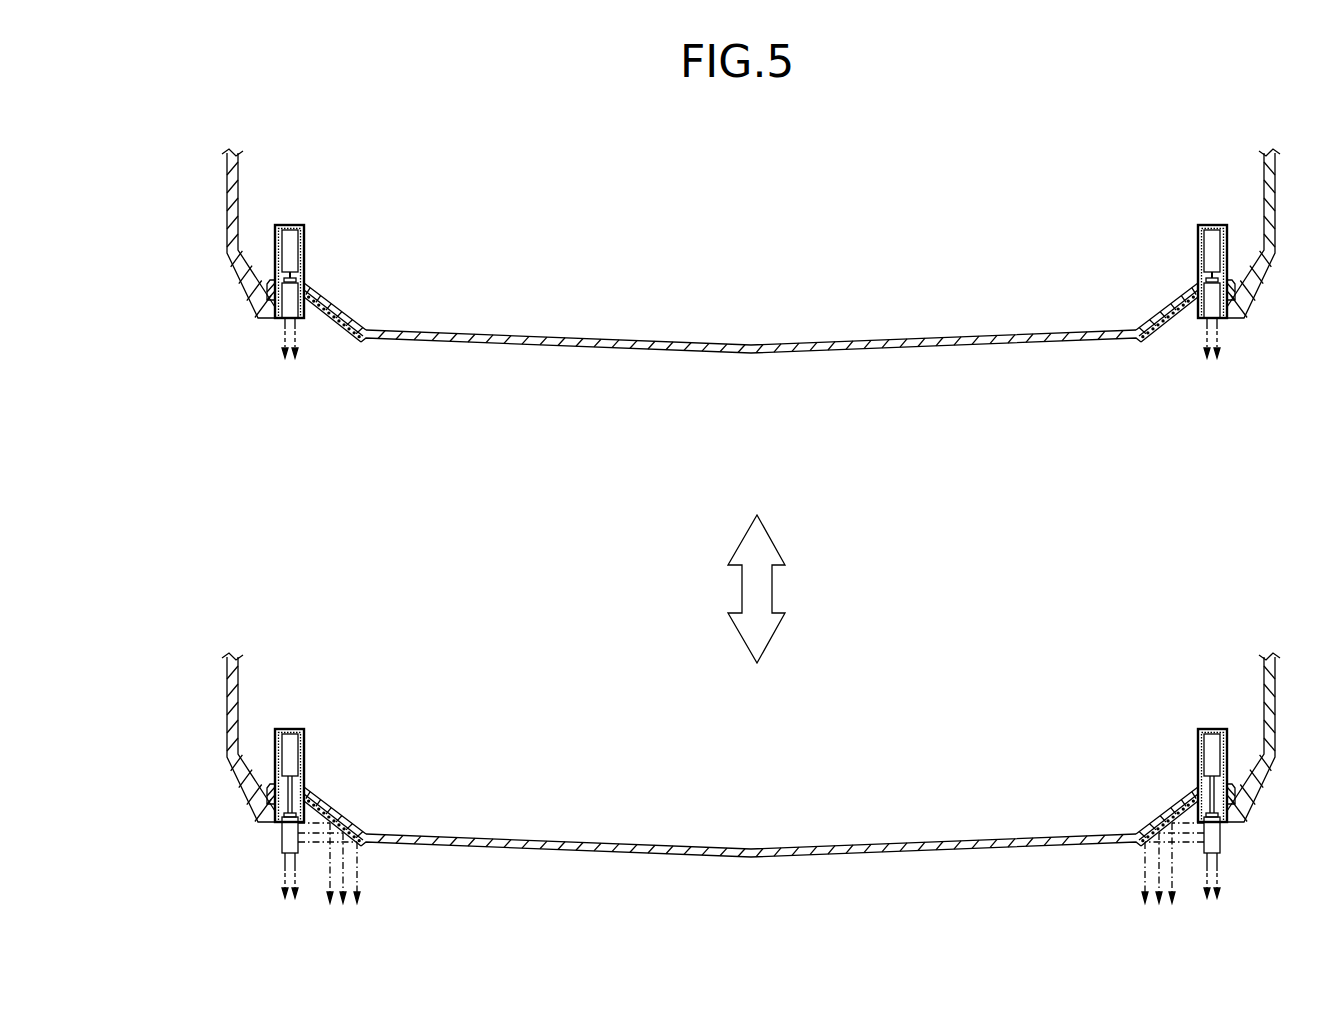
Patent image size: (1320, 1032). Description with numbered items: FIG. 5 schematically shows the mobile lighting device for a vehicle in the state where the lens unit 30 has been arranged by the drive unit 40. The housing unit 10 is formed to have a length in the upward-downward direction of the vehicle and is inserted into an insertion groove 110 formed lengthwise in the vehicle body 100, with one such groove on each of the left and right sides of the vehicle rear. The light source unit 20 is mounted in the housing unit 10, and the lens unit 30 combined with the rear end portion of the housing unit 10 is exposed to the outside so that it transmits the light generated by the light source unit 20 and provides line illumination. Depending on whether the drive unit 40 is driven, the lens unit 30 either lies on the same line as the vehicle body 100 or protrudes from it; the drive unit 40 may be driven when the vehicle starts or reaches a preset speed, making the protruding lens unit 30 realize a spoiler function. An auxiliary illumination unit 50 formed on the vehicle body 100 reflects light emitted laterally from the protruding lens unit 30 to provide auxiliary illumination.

The housing unit 10 is at (287, 305).
The light source unit 20 is at (286, 271).
The lens unit 30 is at (268, 301).
The drive unit 40 is at (292, 232).
The auxiliary illumination unit 50 is at (333, 320).
The vehicle body 100 is at (227, 212).
The insertion groove 110 is at (305, 248).